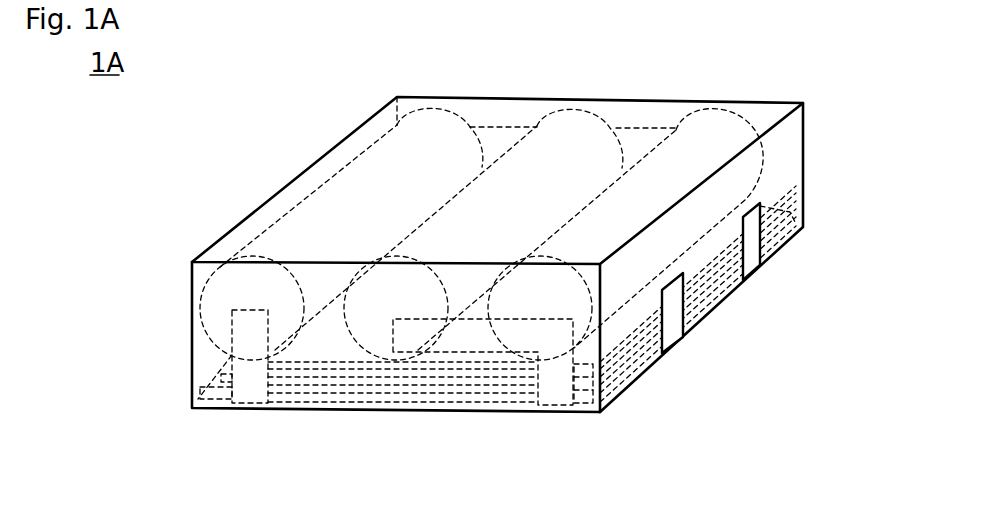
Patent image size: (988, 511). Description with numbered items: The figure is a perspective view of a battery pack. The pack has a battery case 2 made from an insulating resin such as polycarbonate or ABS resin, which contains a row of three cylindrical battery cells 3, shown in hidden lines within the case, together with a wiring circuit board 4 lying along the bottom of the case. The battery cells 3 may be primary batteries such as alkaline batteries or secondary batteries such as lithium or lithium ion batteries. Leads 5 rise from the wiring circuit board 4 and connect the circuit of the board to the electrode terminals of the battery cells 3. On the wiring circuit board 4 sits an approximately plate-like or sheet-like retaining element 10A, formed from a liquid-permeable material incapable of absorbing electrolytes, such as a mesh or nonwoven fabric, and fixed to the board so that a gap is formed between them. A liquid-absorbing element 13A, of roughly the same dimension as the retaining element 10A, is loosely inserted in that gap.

The battery case 2 is at (362, 126).
The battery cells 3 is at (200, 306).
The wiring circuit board 4 is at (200, 393).
The leads 5 is at (232, 361).
The retaining element 10A is at (606, 328).
The liquid-absorbing element 13A is at (772, 210).